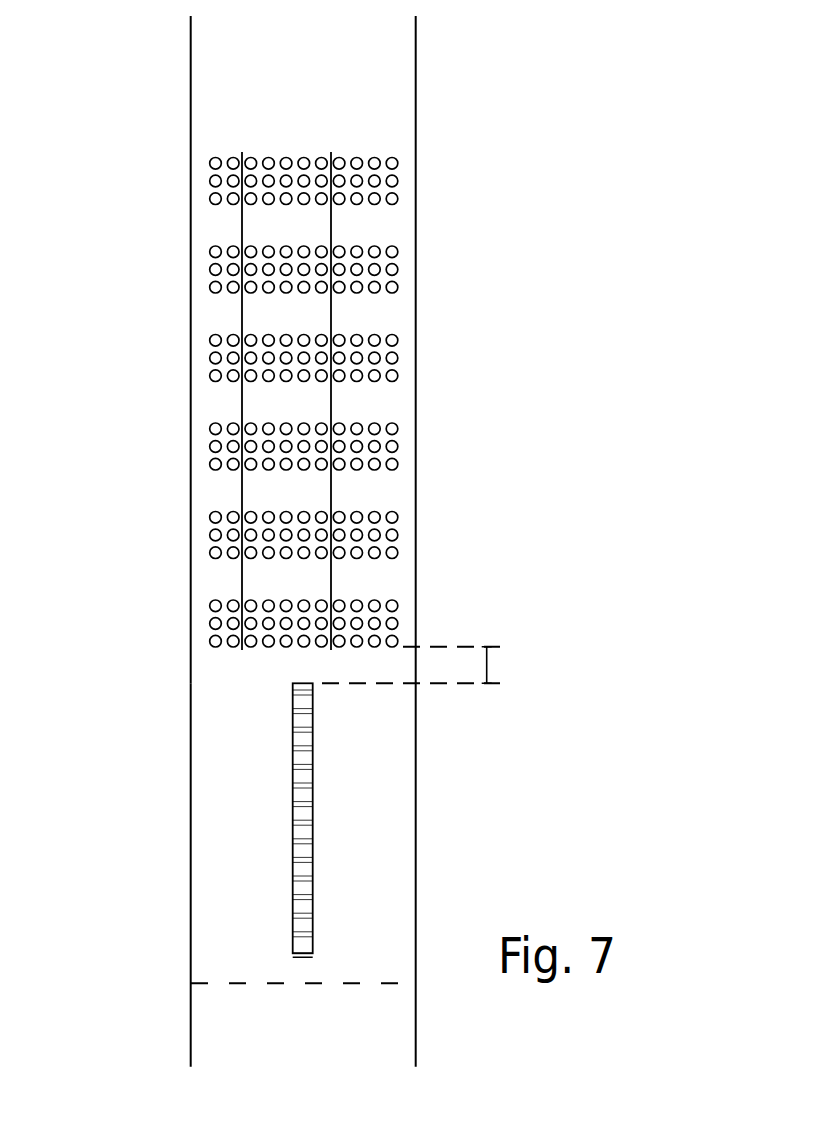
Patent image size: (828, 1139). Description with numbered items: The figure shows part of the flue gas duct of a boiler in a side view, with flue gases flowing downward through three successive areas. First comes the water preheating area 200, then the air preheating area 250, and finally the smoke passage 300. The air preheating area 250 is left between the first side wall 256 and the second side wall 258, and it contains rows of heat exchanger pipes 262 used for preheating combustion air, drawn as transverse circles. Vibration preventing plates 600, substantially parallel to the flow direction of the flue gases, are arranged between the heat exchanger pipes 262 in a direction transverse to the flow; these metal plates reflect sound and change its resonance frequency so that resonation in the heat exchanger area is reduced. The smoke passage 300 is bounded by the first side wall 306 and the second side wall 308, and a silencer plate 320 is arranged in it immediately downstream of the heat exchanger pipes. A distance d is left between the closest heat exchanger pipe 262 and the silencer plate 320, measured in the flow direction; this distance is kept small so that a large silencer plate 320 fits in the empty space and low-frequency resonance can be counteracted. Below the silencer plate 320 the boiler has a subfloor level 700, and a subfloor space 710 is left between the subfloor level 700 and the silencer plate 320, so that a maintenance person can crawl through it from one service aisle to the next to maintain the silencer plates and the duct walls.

The water preheating area 200 is at (332, 74).
The air preheating area 250 is at (568, 262).
The first side wall 256 is at (147, 369).
The second side wall 258 is at (456, 363).
The vibration preventing plate 600 is at (332, 478).
The heat exchanger pipe 262 is at (305, 642).
The smoke passage 300 is at (570, 745).
The first side wall 306 is at (132, 861).
The second side wall 308 is at (456, 852).
The silencer plate 320 is at (302, 747).
The subfloor space 710 is at (287, 972).
The subfloor level 700 is at (223, 983).